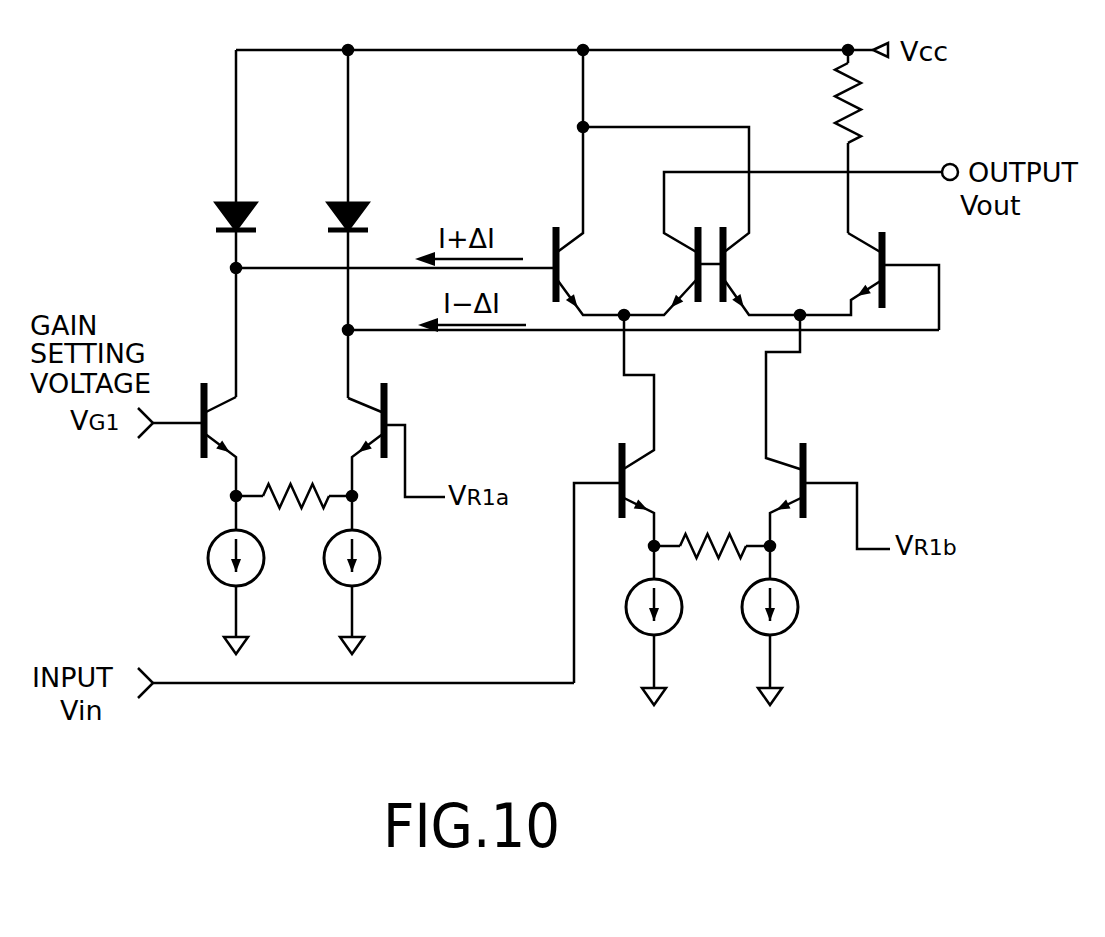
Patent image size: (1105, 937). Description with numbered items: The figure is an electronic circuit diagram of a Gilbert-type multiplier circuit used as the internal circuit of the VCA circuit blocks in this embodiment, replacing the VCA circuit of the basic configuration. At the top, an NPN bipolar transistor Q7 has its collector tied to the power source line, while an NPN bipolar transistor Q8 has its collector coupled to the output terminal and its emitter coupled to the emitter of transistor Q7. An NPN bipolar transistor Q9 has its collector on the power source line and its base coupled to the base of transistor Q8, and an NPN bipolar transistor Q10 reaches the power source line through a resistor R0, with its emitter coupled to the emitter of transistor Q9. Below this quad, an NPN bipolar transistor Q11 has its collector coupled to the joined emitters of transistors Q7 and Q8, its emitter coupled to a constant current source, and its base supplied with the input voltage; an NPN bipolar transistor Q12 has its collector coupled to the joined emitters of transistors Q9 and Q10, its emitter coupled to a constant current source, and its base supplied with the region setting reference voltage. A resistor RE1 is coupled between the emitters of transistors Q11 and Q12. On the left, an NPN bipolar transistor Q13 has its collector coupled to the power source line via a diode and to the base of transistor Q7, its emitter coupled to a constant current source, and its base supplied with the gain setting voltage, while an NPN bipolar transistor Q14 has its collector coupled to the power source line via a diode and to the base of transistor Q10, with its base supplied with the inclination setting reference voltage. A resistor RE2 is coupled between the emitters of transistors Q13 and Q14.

The NPN bipolar transistor Q7 is at (590, 182).
The NPN bipolar transistor Q8 is at (787, 243).
The NPN bipolar transistor Q9 is at (691, 221).
The NPN bipolar transistor Q10 is at (869, 281).
The NPN bipolar transistor Q11 is at (635, 563).
The NPN bipolar transistor Q12 is at (810, 496).
The NPN bipolar transistor Q13 is at (185, 439).
The NPN bipolar transistor Q14 is at (399, 440).
The resistor R0 is at (867, 141).
The resistor RE1 is at (712, 561).
The resistor RE2 is at (294, 516).